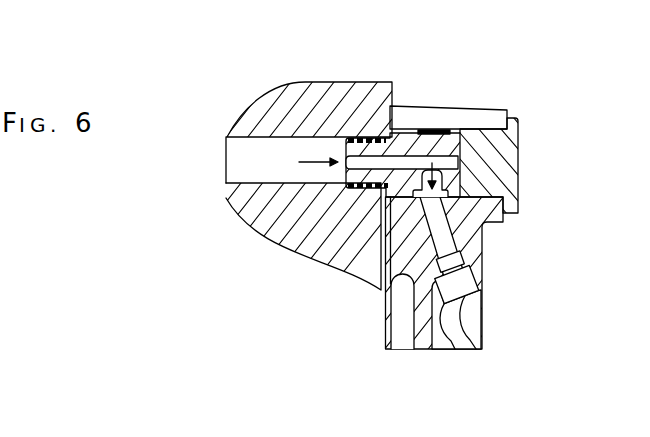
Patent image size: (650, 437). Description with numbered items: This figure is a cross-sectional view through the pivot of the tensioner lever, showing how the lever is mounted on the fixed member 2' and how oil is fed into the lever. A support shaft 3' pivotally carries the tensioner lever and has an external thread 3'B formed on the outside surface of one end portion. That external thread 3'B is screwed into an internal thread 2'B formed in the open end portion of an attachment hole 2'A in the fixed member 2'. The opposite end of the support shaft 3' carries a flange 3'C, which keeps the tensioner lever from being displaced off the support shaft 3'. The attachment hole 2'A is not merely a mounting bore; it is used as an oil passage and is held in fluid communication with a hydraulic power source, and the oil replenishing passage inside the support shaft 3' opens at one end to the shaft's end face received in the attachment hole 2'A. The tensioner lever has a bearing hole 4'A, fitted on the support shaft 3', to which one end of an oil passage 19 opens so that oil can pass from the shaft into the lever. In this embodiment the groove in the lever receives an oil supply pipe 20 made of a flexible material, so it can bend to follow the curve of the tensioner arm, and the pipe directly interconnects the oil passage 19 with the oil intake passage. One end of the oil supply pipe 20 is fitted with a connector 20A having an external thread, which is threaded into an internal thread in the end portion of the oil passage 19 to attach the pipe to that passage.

The fixed member 2' is at (309, 105).
The attachment hole 2'A is at (279, 235).
The internal thread 2'B is at (336, 247).
The support shaft 3' is at (471, 160).
The external thread 3'B is at (379, 85).
The flange 3'C is at (485, 96).
The bearing hole 4'A is at (394, 256).
The oil passage 19 is at (465, 246).
The oil supply pipe 20 is at (457, 343).
The connector 20A is at (475, 289).